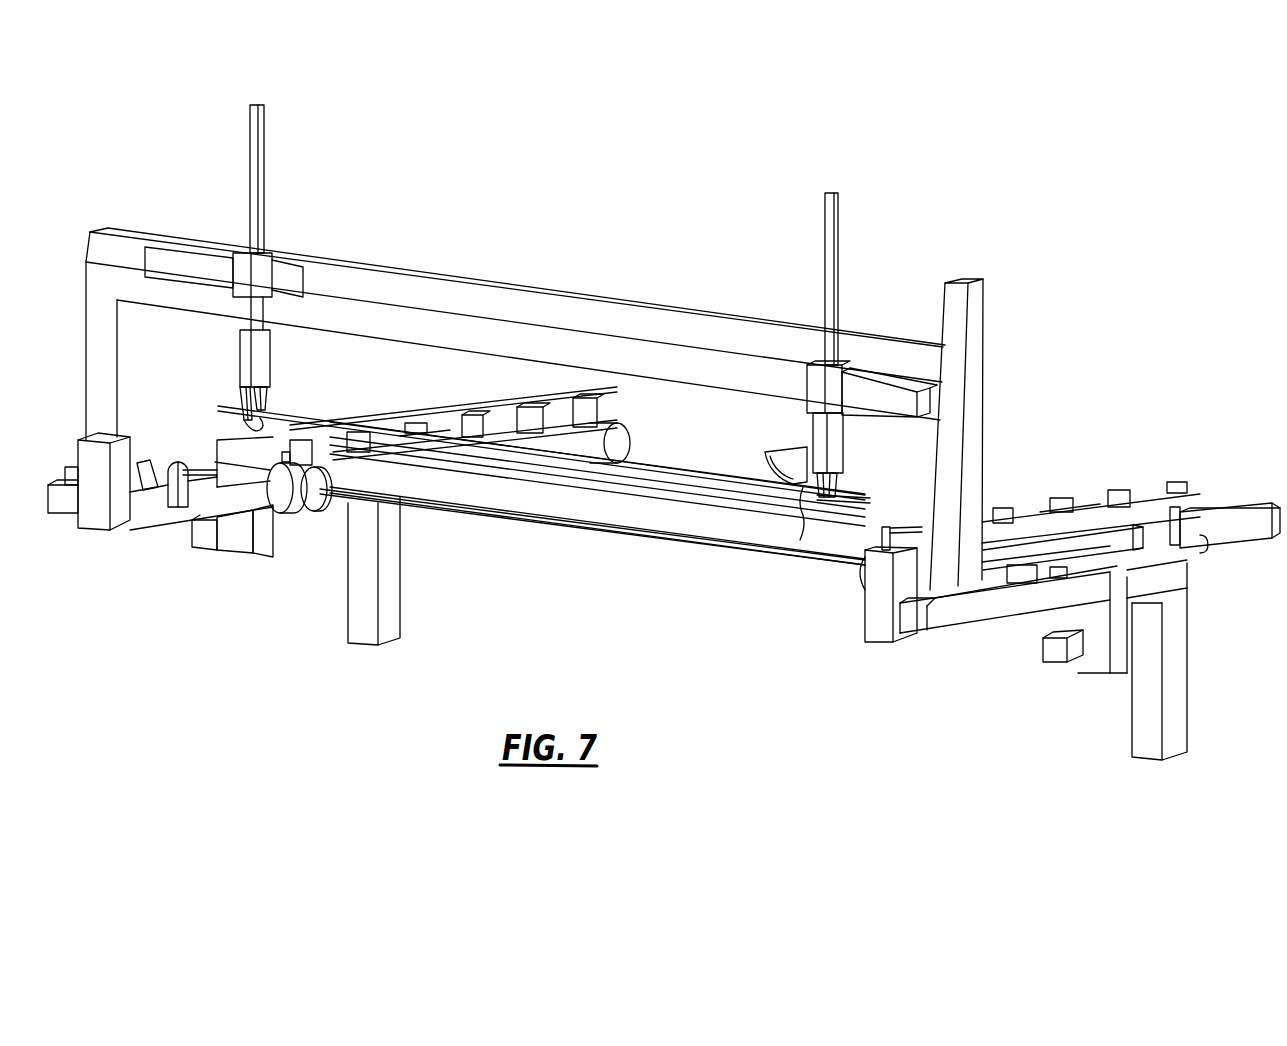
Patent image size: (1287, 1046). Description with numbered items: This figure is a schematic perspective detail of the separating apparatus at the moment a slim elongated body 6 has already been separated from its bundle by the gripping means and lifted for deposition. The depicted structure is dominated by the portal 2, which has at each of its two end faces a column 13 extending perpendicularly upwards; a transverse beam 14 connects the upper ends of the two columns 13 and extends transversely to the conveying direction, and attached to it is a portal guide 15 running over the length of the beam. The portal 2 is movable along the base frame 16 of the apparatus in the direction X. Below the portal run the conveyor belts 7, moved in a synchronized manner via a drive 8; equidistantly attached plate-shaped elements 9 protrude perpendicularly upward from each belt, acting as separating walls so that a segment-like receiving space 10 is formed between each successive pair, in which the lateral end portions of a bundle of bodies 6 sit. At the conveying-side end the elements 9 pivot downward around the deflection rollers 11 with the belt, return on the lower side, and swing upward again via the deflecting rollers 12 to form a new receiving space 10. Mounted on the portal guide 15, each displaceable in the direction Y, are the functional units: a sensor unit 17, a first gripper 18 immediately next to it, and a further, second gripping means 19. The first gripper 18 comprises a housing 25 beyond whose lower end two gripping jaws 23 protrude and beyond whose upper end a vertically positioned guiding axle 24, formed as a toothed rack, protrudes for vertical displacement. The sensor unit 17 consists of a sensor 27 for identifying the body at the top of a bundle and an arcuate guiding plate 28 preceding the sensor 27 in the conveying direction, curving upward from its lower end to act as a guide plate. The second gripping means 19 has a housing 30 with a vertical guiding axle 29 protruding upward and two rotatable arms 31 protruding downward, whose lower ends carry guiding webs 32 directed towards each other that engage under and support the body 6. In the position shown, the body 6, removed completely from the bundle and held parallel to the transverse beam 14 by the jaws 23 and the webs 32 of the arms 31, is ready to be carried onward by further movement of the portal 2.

The portal 2 is at (709, 249).
The elongated body 6 is at (682, 475).
The conveyor belt 7 is at (288, 500).
The drive 8 is at (1237, 510).
The plate-shaped element 9 is at (413, 423).
The receiving space 10 is at (442, 420).
The deflection roller 11 is at (317, 503).
The deflecting roller 12 is at (620, 433).
The column 13 is at (128, 366).
The transverse beam 14 is at (397, 272).
The portal guide 15 is at (513, 335).
The base frame 16 is at (393, 580).
The sensor unit 17 is at (804, 448).
The first gripper 18 is at (790, 362).
The second gripping means 19 is at (300, 318).
The gripping jaw 23 is at (837, 483).
The guiding axle 24 is at (838, 214).
The housing 25 is at (840, 423).
The sensor 27 is at (800, 538).
The arcuate guiding plate 28 is at (767, 472).
The guiding axle 29 is at (262, 158).
The housing 30 is at (262, 353).
The rotatable arm 31 is at (240, 392).
The guiding web 32 is at (243, 427).